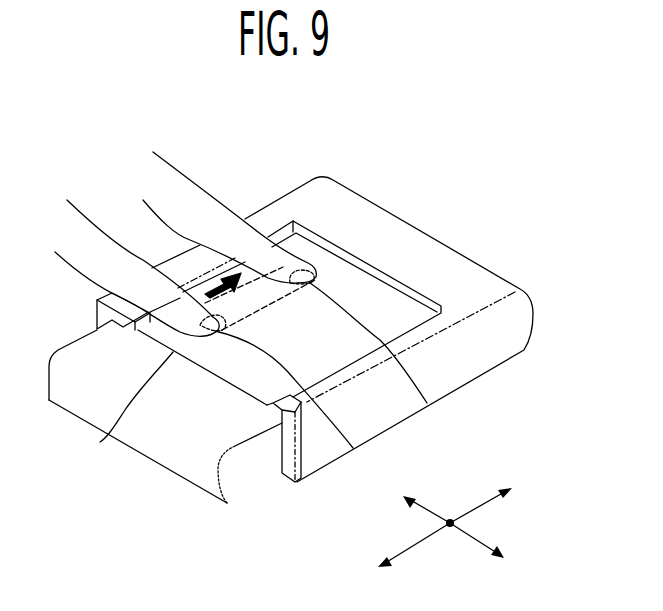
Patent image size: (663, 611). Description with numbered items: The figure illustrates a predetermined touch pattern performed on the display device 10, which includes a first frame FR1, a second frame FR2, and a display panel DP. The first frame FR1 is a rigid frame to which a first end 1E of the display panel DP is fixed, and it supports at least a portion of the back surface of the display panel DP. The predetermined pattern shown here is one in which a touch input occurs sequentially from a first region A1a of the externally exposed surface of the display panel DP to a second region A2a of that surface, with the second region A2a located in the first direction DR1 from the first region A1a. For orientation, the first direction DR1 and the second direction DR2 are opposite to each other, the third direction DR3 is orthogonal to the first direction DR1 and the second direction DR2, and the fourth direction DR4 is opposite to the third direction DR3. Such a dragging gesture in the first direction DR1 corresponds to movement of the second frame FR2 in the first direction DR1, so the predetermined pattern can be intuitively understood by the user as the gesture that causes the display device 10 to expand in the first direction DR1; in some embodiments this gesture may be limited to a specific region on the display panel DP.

The display device 10 is at (338, 128).
The second frame FR2 is at (278, 200).
The first frame FR1 is at (74, 346).
The first end 1E is at (100, 440).
The display panel DP is at (147, 316).
The first region A1a is at (356, 448).
The second region A2a is at (428, 404).
The first direction DR1 is at (498, 496).
The second direction DR2 is at (394, 558).
The third direction DR3 is at (497, 553).
The fourth direction DR4 is at (409, 501).